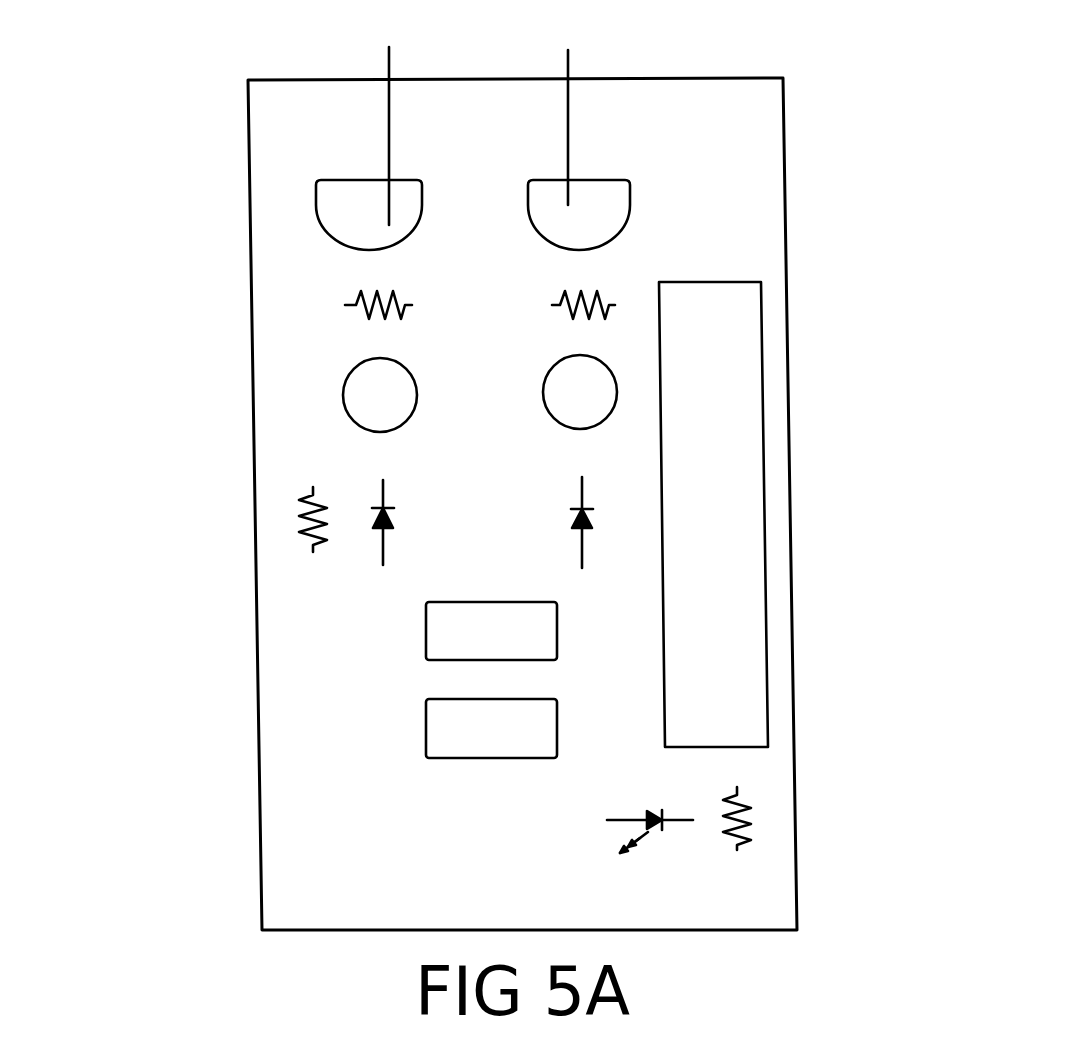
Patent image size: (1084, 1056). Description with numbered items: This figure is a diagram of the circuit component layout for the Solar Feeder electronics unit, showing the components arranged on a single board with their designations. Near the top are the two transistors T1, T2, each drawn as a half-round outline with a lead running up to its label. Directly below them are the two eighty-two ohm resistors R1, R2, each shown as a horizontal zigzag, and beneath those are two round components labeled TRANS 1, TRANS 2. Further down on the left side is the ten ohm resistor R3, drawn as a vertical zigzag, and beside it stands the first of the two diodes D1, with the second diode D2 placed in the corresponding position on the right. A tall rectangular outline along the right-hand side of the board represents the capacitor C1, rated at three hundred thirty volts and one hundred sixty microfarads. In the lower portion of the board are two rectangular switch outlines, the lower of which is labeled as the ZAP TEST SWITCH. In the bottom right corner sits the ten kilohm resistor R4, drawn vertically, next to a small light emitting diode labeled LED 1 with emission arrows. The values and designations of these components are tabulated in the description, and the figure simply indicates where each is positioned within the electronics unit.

The transistor T1 is at (369, 128).
The transistor T2 is at (579, 129).
The resistor R1 is at (358, 303).
The resistor R2 is at (603, 305).
The resistor R3 is at (302, 510).
The resistor R4 is at (738, 800).
The transistor TRANS 1 is at (388, 394).
The transistor TRANS 2 is at (600, 392).
The diode D1 is at (383, 542).
The diode D2 is at (592, 518).
The capacitor C1 is at (708, 608).
The light emitting diode LED 1 is at (663, 825).
The zap test switch ZAP TEST SWITCH is at (438, 735).